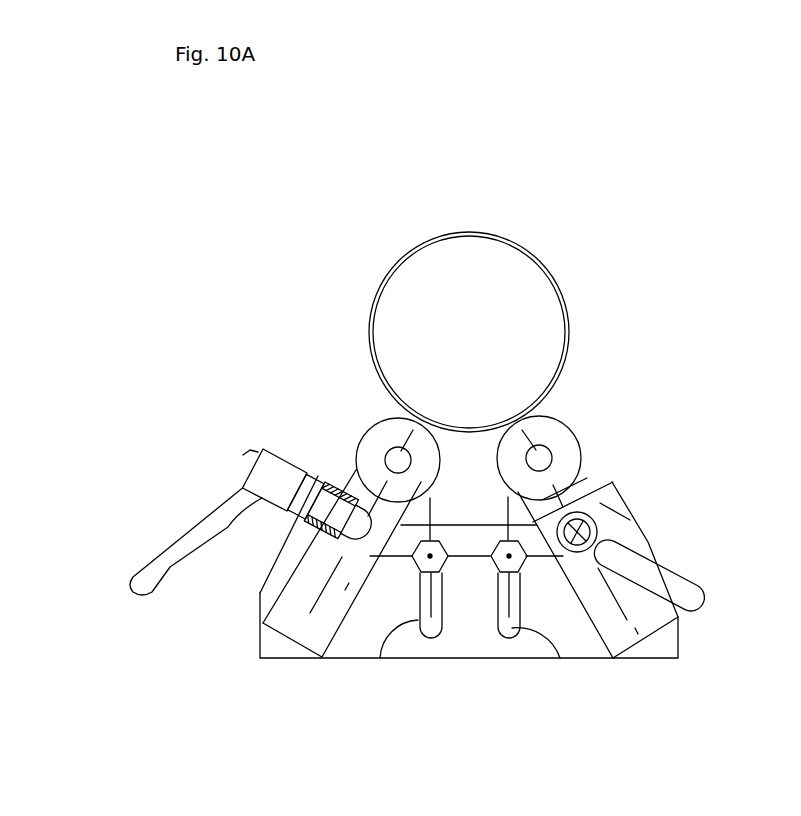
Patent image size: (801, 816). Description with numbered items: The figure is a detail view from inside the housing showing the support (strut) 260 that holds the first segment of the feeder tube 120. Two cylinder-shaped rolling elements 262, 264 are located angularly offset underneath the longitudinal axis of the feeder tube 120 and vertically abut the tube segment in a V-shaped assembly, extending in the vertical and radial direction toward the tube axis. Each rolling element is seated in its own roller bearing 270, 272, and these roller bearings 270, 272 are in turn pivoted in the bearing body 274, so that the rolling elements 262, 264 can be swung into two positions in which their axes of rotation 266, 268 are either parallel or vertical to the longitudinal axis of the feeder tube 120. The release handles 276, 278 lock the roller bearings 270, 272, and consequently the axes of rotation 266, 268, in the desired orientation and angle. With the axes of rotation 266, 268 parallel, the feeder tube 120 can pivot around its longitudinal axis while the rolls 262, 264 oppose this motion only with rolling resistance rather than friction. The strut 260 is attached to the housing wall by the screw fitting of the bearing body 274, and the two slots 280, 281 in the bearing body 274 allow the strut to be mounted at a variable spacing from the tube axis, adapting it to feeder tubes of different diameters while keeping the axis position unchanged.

The feeder tube 120 is at (508, 240).
The support (strut) 260 is at (447, 668).
The rolling element 262 is at (393, 420).
The rolling element 264 is at (567, 420).
The axis of rotation 266 is at (363, 447).
The axis of rotation 268 is at (553, 455).
The roller bearing 270 is at (345, 487).
The roller bearing 272 is at (600, 478).
The bearing (bearing body) 274 is at (468, 642).
The release handle 276 is at (178, 538).
The release handle 278 is at (670, 587).
The slot 280 is at (380, 658).
The slot 281 is at (560, 658).